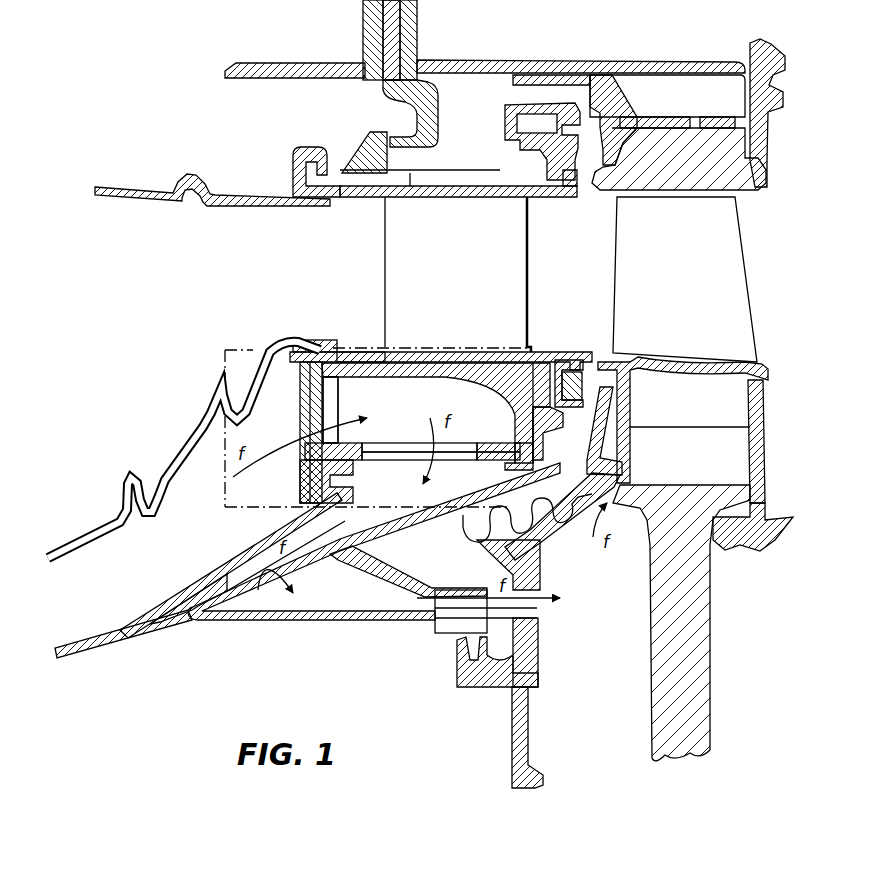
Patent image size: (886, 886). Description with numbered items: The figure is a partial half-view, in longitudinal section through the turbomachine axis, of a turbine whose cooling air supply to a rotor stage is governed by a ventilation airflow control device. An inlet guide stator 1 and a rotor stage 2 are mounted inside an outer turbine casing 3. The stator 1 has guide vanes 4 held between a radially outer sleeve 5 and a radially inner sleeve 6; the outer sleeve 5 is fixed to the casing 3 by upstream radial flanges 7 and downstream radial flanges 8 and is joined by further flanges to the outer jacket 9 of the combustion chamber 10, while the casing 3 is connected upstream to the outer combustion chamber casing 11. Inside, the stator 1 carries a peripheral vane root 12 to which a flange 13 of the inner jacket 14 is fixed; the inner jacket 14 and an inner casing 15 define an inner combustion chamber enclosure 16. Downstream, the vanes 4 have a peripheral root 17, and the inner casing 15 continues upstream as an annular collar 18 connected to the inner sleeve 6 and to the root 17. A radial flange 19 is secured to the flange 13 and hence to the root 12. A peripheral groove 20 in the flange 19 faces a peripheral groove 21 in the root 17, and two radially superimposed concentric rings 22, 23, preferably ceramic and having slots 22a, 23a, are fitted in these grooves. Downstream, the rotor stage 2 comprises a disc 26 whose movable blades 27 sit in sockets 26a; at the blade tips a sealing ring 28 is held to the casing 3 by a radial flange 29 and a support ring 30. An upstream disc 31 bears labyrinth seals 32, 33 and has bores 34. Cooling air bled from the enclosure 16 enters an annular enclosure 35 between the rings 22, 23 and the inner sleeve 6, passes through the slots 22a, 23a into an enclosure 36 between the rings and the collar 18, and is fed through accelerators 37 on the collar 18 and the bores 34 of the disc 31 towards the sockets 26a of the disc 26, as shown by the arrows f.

The inlet guide stator 1 is at (358, 291).
The rotor stage 2 is at (765, 479).
The outer turbine casing 3 is at (540, 62).
The guide vanes 4 is at (457, 252).
The radially outer sleeve 5 is at (370, 186).
The radially inner sleeve 6 is at (448, 353).
The upstream radial flanges 7 is at (418, 112).
The downstream radial flanges 8 is at (505, 130).
The outer jacket 9 is at (136, 190).
The combustion chamber 10 is at (171, 284).
The outer combustion chamber casing 11 is at (253, 50).
The peripheral vane root 12 is at (320, 350).
The flange 13 is at (305, 388).
The inner jacket 14 is at (130, 496).
The inner casing 15 is at (96, 650).
The inner combustion chamber enclosure 16 is at (137, 580).
The peripheral root 17 is at (545, 499).
The annular collar 18 is at (430, 523).
The radial flange 19 is at (300, 500).
The peripheral groove 20 is at (300, 470).
The peripheral groove 21 is at (510, 442).
The ring 22 is at (497, 461).
The slots 22a is at (411, 460).
The ring 23 is at (478, 441).
The slots 23a is at (382, 442).
The disc 26 is at (703, 623).
The sockets 26a is at (682, 481).
The movable blades 27 is at (689, 273).
The sealing ring 28 is at (742, 187).
The radial flange 29 is at (752, 122).
The support ring 30 is at (608, 102).
The disc 31 is at (512, 736).
The labyrinth seal 32 is at (460, 666).
The labyrinth seal 33 is at (537, 550).
The bores 34 is at (540, 612).
The annular enclosure 35 is at (362, 353).
The enclosure 36 is at (362, 560).
The accelerators 37 is at (455, 620).